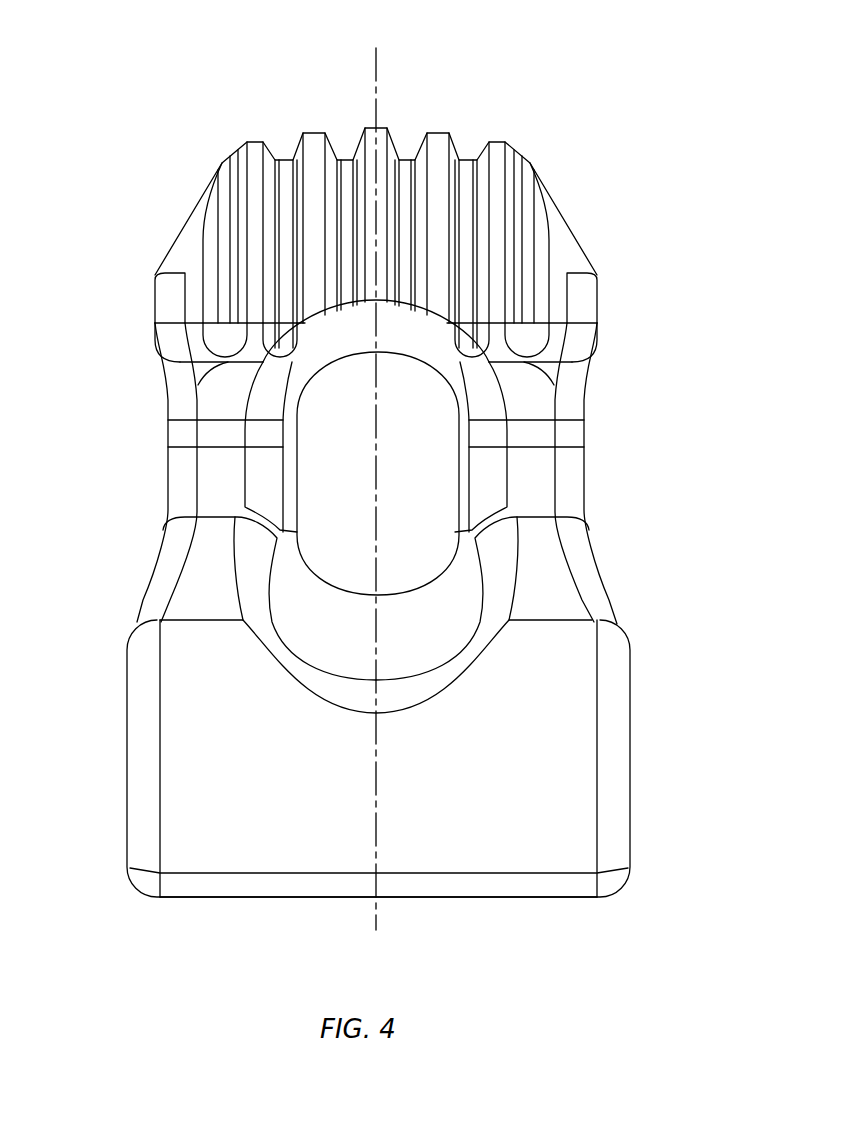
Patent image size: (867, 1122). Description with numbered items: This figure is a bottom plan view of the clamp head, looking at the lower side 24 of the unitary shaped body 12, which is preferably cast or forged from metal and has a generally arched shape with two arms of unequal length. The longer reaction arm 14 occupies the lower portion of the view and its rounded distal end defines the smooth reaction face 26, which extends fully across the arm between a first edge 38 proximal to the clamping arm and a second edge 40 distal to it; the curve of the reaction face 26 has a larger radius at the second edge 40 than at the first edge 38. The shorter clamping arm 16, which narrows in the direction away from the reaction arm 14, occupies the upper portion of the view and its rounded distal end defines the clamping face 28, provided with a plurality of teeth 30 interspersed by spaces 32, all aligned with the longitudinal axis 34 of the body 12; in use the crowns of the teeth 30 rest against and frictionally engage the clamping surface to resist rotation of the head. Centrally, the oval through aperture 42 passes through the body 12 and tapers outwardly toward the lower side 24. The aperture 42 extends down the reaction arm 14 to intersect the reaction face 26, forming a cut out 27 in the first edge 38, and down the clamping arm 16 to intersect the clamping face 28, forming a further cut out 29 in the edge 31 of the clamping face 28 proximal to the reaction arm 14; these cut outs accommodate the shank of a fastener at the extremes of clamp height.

The body 12 is at (540, 466).
The reaction arm 14 is at (130, 711).
The clamping arm 16 is at (175, 297).
The lower side 24 is at (221, 476).
The reaction face 26 is at (312, 810).
The cut out 27 is at (410, 707).
The clamping face 28 is at (522, 242).
The further cut out 29 is at (404, 353).
The teeth 30 is at (255, 170).
The edge of the clamping face 31 is at (198, 385).
The spaces 32 is at (284, 177).
The longitudinal axis 34 is at (376, 56).
The first edge 38 is at (565, 612).
The second edge 40 is at (483, 874).
The through aperture 42 is at (440, 430).